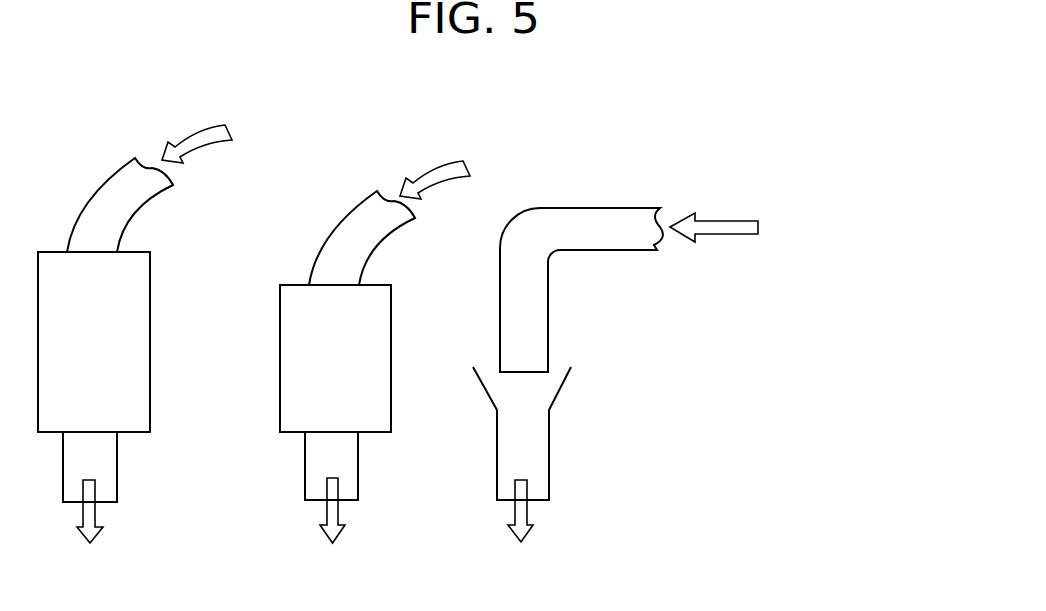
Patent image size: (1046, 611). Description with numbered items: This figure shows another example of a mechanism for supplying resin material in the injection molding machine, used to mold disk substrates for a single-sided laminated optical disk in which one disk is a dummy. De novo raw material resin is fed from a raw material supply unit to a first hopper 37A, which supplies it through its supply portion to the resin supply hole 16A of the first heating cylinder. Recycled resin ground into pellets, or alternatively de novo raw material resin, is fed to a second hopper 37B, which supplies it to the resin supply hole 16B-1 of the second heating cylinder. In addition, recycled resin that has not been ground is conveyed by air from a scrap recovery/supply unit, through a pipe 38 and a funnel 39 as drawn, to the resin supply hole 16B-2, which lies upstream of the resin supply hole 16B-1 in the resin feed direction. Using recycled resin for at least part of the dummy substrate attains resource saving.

The first hopper 37A is at (138, 312).
The second hopper 37B is at (375, 312).
The scrap supply pipe 38 is at (535, 297).
The scrap supply funnel 39 is at (527, 425).
The resin supply hole 16A is at (92, 530).
The resin supply hole 16B-1 is at (336, 528).
The resin supply hole 16B-2 is at (522, 529).